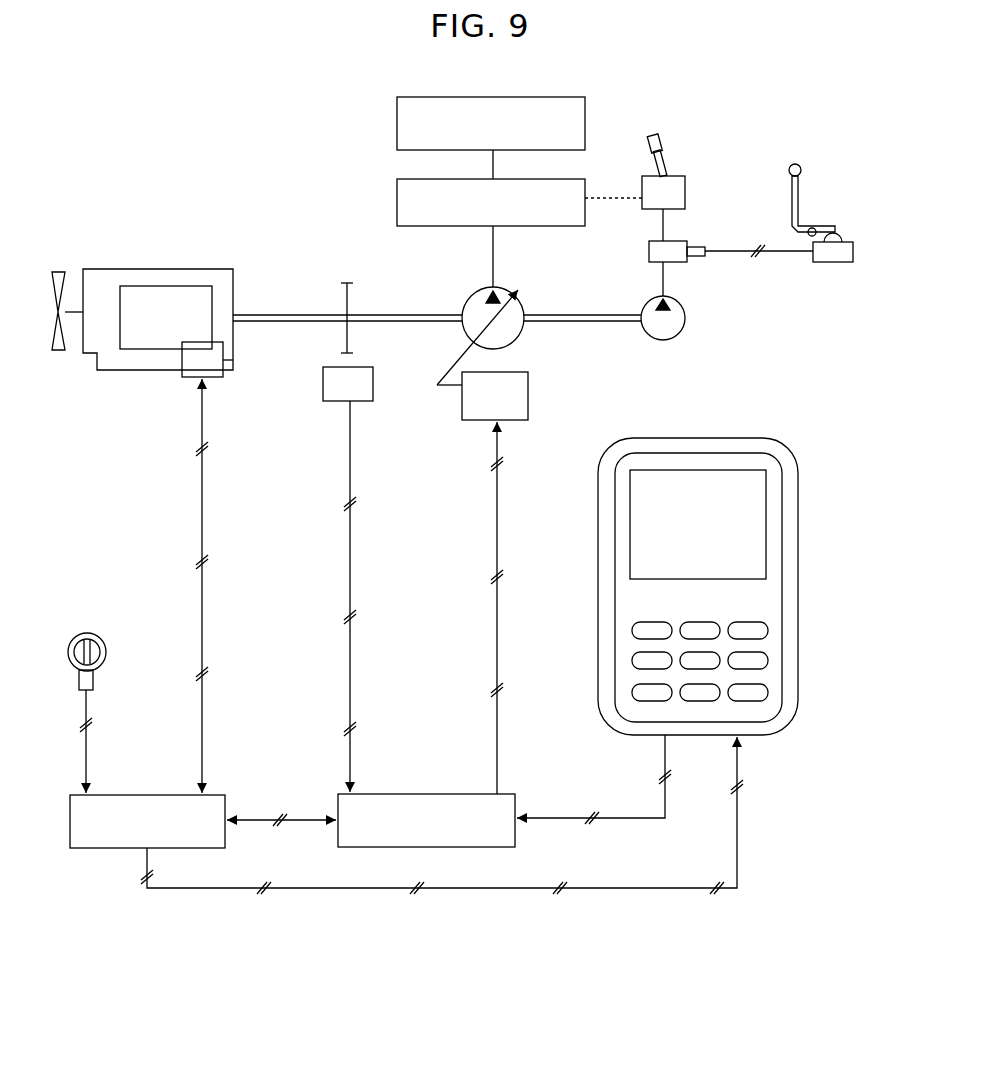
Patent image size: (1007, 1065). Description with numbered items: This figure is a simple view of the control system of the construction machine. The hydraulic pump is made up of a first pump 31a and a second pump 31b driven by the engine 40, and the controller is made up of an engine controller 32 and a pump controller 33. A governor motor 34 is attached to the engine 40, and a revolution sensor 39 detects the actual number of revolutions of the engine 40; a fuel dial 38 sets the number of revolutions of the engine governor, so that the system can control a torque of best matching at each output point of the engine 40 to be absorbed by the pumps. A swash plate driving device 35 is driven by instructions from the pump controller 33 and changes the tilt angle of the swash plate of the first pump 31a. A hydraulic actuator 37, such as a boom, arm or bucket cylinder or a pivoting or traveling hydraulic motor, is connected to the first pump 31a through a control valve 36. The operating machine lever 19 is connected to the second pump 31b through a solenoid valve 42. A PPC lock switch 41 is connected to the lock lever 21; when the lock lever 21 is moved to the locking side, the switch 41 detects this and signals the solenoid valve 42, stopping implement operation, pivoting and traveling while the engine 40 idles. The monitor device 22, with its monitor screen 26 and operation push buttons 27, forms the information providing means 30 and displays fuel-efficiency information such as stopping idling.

The operating machine lever 19 is at (673, 162).
The lock lever 21 is at (800, 197).
The monitor device 22 is at (699, 570).
The monitor screen 26 is at (645, 540).
The operation push buttons 27 is at (768, 630).
The information providing means 30 is at (699, 550).
The first pump 31a is at (462, 298).
The second pump 31b is at (646, 336).
The engine controller 32 is at (117, 850).
The pump controller 33 is at (440, 792).
The governor motor 34 is at (233, 358).
The swash plate driving device 35 is at (475, 421).
The control valve 36 is at (518, 228).
The hydraulic actuator 37 is at (393, 124).
The fuel dial 38 is at (100, 632).
The revolution sensor 39 is at (325, 403).
The engine 40 is at (160, 268).
The PPC lock switch 41 is at (833, 264).
The solenoid valve 42 is at (680, 241).